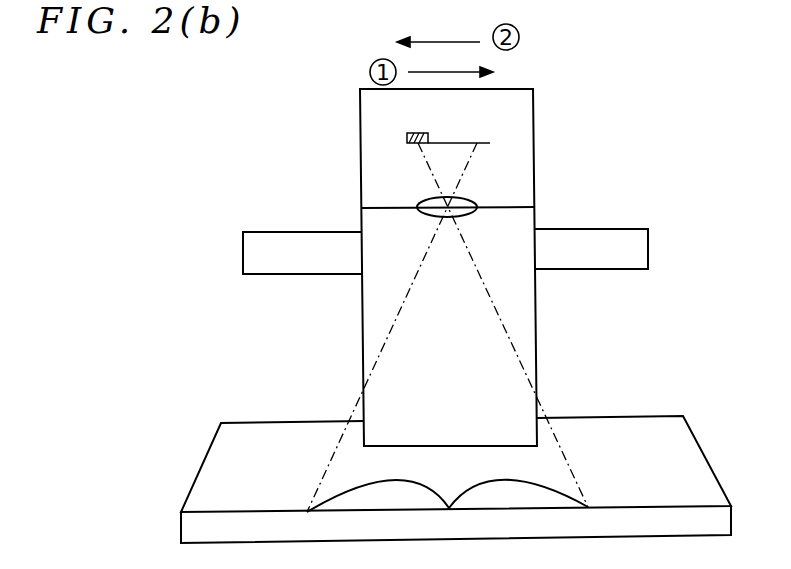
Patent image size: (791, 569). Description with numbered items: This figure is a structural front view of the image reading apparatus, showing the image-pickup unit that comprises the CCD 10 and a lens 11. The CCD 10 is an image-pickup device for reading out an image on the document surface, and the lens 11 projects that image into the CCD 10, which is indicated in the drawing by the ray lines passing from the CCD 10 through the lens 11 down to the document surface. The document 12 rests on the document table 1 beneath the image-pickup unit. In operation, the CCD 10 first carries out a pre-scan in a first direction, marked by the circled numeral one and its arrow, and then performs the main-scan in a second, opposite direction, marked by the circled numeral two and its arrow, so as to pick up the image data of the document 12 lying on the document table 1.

The document table 1 is at (710, 505).
The CCD 10 is at (406, 136).
The lens 11 is at (463, 216).
The document 12 is at (390, 480).